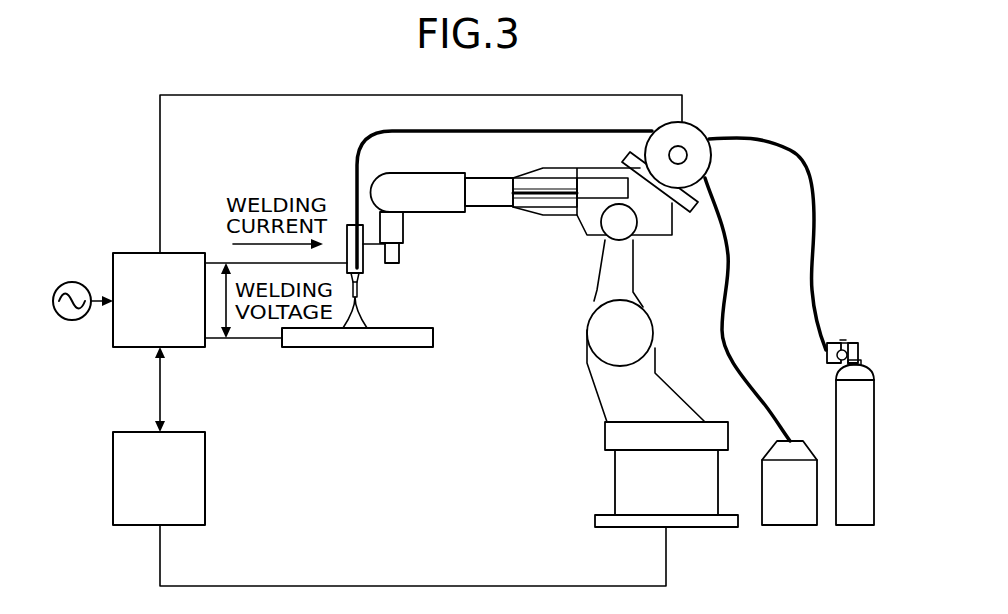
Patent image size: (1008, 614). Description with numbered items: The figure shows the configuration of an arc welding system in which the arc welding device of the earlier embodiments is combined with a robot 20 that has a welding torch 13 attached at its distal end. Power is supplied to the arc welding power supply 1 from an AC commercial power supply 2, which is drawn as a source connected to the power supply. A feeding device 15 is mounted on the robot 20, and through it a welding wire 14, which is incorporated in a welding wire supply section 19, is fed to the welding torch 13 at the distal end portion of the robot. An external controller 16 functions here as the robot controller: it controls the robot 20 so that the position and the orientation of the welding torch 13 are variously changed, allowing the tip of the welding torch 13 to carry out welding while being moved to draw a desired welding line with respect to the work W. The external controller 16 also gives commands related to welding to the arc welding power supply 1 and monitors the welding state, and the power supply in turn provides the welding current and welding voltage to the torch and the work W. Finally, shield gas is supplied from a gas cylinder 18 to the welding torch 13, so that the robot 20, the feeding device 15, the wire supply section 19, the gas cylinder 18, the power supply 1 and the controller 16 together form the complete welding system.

The arc welding power supply 1 is at (127, 349).
The AC commercial power supply 2 is at (71, 282).
The welding torch 13 is at (364, 286).
The welding wire 14 is at (356, 151).
The feeding device 15 is at (700, 126).
The external controller 16 is at (133, 527).
The gas cylinder 18 is at (858, 527).
The welding wire supply section 19 is at (800, 527).
The robot 20 is at (594, 389).
The work W is at (395, 349).